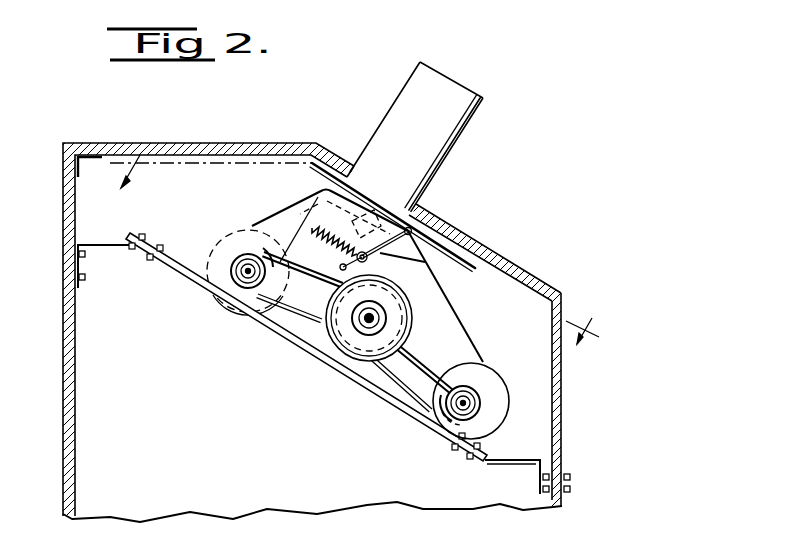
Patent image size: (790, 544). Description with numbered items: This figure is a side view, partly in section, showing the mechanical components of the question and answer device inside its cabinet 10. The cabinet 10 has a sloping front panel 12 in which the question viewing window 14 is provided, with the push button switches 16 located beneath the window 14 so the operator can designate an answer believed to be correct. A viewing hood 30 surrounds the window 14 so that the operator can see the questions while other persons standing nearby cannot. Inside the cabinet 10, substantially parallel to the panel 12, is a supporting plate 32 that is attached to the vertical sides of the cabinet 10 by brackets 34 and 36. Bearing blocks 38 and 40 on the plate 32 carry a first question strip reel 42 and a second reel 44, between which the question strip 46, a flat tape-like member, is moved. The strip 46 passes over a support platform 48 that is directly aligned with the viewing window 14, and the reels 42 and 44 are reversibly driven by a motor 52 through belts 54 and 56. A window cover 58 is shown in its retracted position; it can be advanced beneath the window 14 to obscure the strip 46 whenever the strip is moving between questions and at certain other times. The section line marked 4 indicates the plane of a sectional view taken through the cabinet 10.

The section line 4- 4 is at (349, 261).
The cabinet 10 is at (62, 290).
The sloping front panel 12 is at (480, 243).
The question viewing window 14 is at (398, 195).
The push button switches 16 is at (440, 191).
The viewing hood 30 is at (470, 126).
The supporting plate 32 is at (183, 276).
The bracket 34 is at (110, 252).
The bracket 36 is at (505, 463).
The bearing block 38 is at (440, 425).
The bearing block 40 is at (237, 307).
The first question strip reel 42 is at (498, 374).
The second reel 44 is at (233, 233).
The question strip 46 is at (280, 218).
The support platform 48 is at (304, 216).
The motor 52 is at (337, 347).
The belt 54 is at (293, 313).
The belt 56 is at (395, 404).
The window cover 58 is at (452, 265).